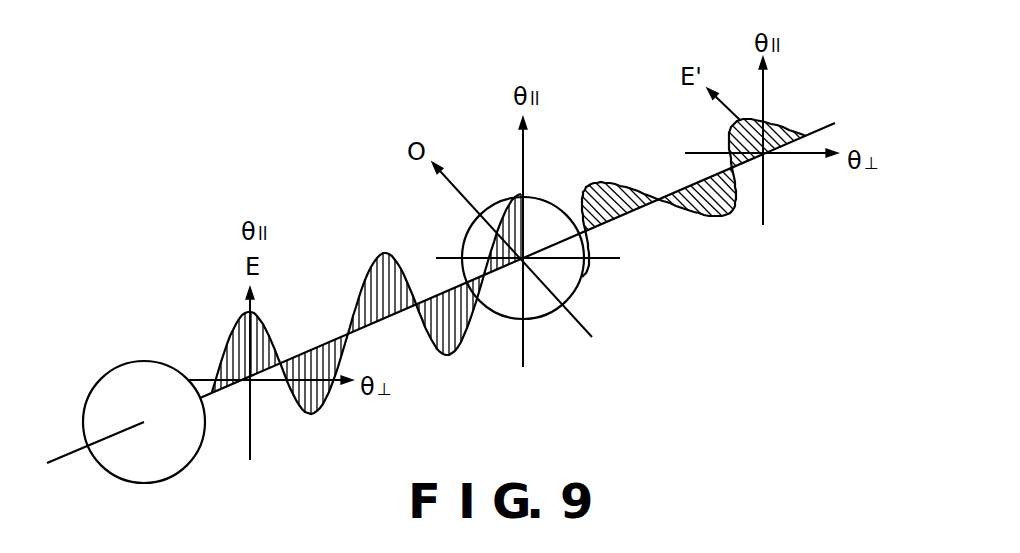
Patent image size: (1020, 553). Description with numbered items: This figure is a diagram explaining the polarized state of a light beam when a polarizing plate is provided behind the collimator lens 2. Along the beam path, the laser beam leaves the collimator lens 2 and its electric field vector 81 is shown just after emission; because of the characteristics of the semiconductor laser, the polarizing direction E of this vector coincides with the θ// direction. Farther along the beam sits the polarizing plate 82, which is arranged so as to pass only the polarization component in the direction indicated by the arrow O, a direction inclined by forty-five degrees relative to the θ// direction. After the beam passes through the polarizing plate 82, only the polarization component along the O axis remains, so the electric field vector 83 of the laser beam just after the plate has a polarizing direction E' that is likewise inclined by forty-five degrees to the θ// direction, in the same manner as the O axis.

The collimator lens 2 is at (148, 378).
The electric field vector of the laser beam 81 is at (389, 250).
The polarizing plate 82 is at (552, 200).
The electric field vector of the laser beam after the polarizing plate 83 is at (734, 217).